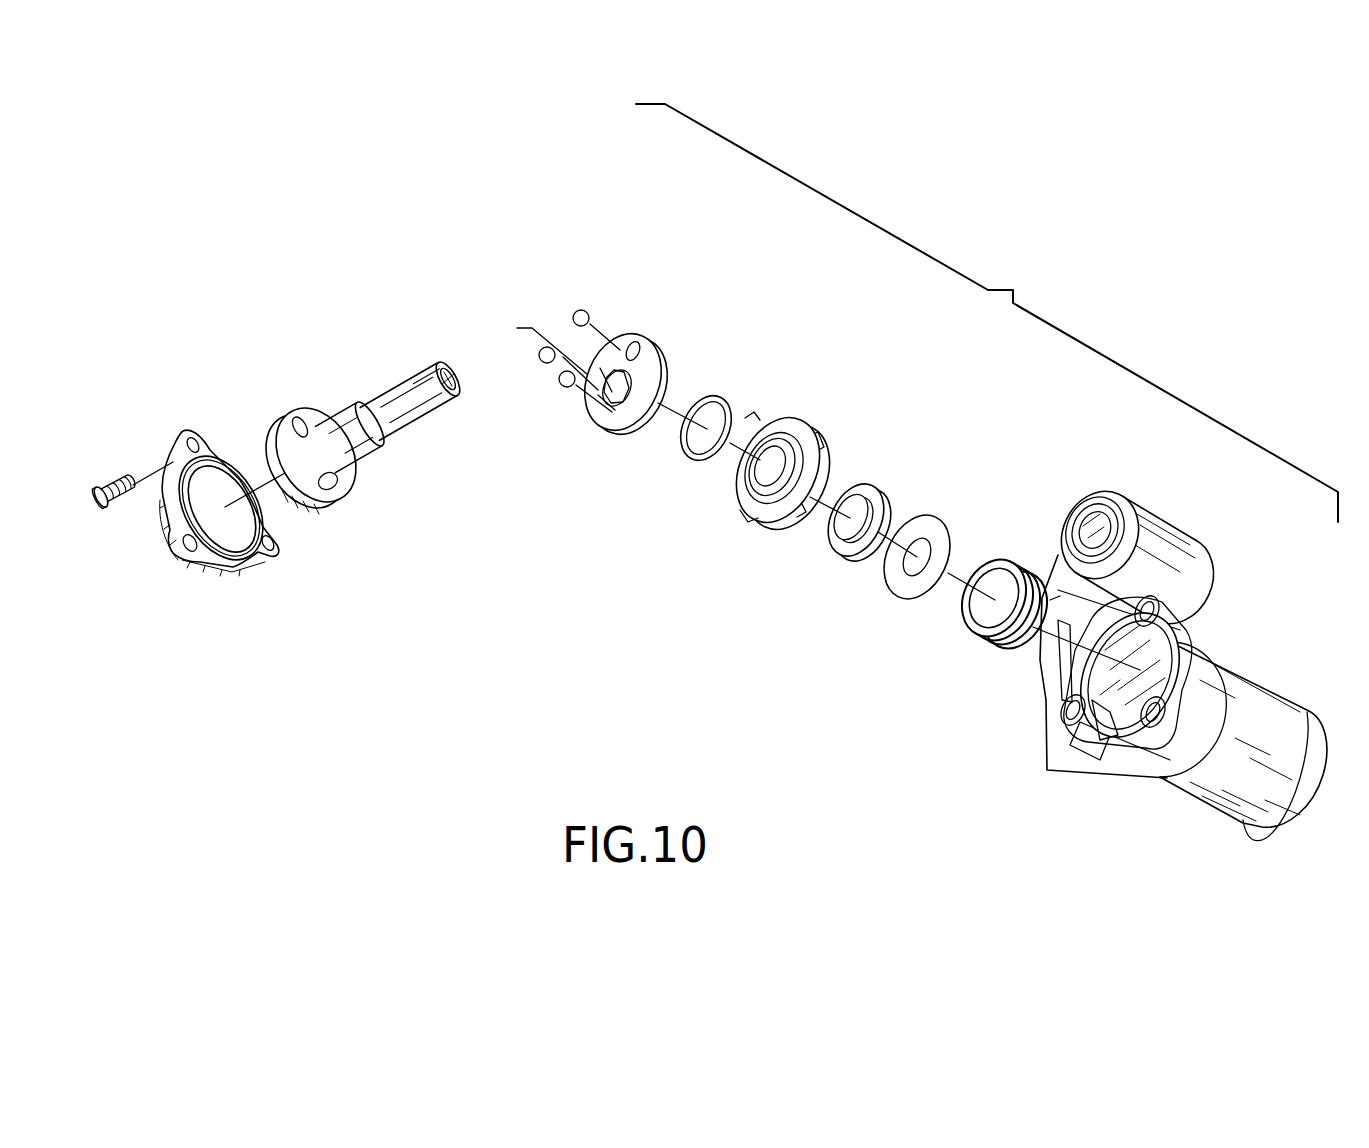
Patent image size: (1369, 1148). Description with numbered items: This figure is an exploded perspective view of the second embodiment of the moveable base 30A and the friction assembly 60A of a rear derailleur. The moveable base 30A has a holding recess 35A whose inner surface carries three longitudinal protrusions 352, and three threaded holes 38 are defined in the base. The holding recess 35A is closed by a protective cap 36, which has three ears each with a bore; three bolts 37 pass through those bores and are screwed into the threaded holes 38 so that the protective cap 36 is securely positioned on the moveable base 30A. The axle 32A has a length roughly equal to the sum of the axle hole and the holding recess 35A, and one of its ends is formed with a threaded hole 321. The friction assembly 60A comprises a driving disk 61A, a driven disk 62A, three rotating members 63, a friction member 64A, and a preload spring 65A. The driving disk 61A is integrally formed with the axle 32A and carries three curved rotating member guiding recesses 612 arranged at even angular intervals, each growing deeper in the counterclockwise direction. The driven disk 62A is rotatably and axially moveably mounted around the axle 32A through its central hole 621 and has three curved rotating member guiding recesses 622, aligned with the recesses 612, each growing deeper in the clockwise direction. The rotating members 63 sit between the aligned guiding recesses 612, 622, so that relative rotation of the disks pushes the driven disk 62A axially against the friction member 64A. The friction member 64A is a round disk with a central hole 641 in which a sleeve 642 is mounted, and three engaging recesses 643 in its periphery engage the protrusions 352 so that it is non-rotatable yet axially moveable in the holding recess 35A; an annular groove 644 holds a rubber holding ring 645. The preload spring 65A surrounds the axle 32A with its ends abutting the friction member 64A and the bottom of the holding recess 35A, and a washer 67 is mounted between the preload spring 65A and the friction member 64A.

The moveable base 30A is at (1168, 690).
The holding recess 35A is at (1155, 662).
The protrusions 352 is at (1103, 735).
The threaded holes 38 is at (1150, 608).
The protective cap 36 is at (216, 565).
The bolts 37 is at (112, 488).
The friction assembly 60A is at (955, 396).
The driving disk 61A is at (288, 437).
The rotating member guiding recesses 612 is at (300, 416).
The axle 32A is at (374, 381).
The threaded hole 321 is at (447, 368).
The driven disk 62A is at (613, 378).
The central hole 621 is at (630, 388).
The rotating member guiding recesses 622 is at (633, 343).
The rotating members 63 is at (582, 309).
The friction member 64A is at (784, 484).
The central hole 641 is at (775, 455).
The sleeve 642 is at (880, 497).
The engaging recesses 643 is at (805, 477).
The annular groove 644 is at (750, 500).
The rubber holding ring 645 is at (692, 448).
The preload spring 65A is at (982, 638).
The washer 67 is at (940, 532).